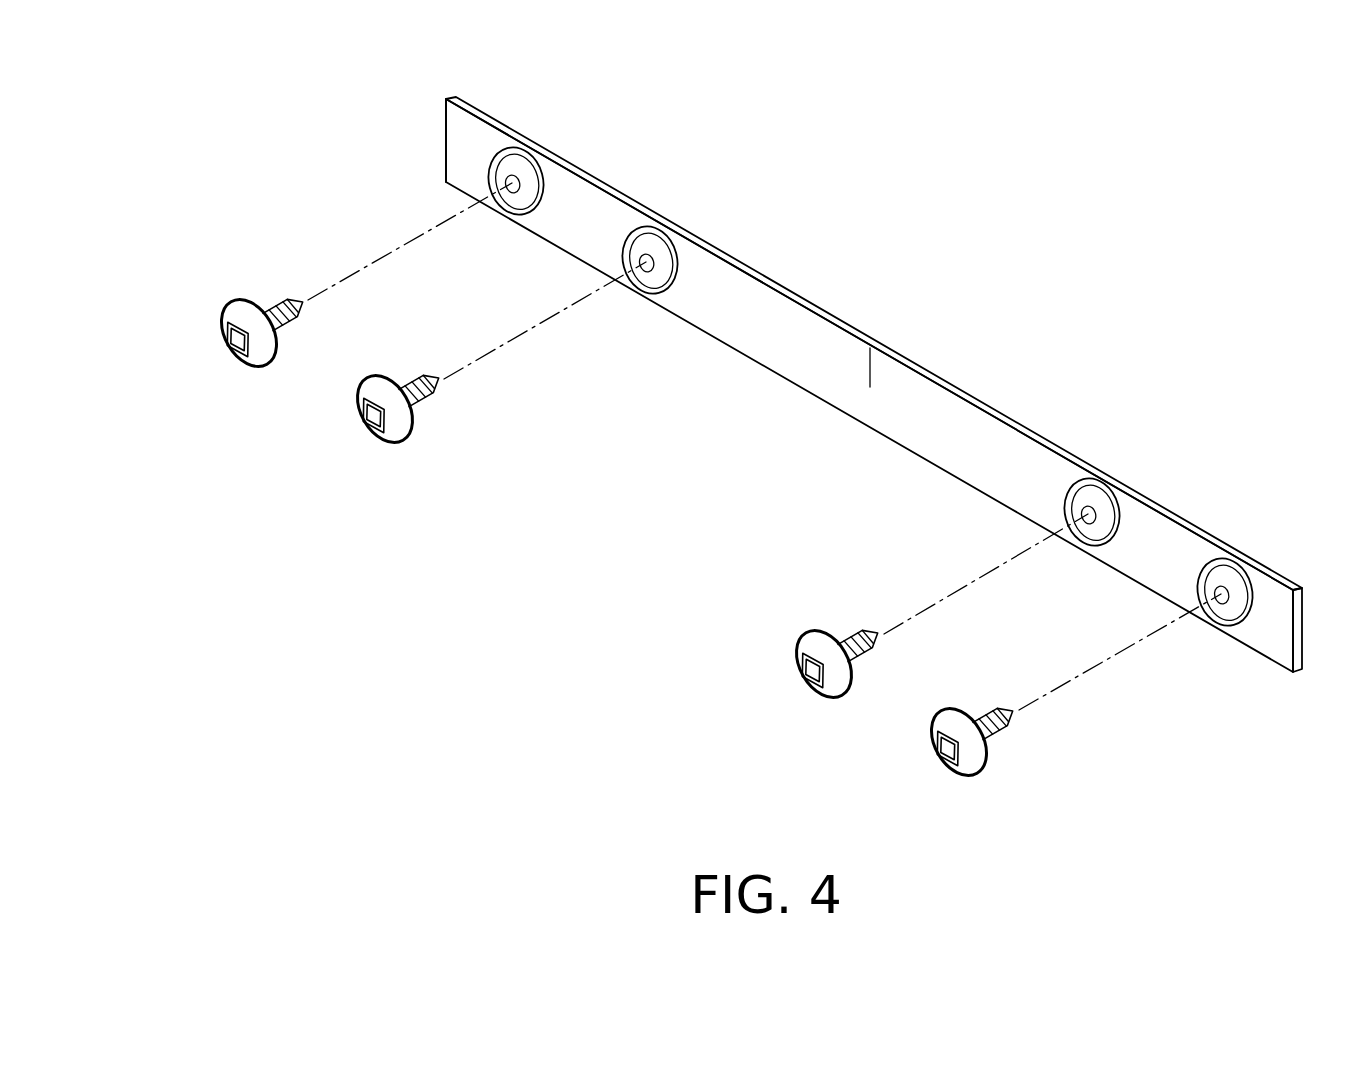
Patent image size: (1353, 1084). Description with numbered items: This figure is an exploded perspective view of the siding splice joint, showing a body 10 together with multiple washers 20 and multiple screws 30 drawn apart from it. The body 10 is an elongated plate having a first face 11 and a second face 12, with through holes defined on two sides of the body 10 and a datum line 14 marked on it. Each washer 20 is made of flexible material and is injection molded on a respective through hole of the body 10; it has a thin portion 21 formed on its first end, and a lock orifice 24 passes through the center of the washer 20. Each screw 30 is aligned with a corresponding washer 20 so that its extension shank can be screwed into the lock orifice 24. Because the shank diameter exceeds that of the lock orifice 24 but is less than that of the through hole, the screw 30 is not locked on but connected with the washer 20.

The body 10 is at (990, 365).
The first face 11 is at (457, 142).
The second face 12 is at (578, 170).
The datum line 14 is at (870, 368).
The washer 20 is at (470, 179).
The thin portion 21 is at (1218, 575).
The lock orifice 24 is at (1225, 597).
The screw 30 is at (205, 360).